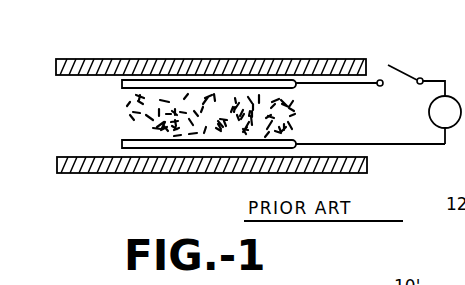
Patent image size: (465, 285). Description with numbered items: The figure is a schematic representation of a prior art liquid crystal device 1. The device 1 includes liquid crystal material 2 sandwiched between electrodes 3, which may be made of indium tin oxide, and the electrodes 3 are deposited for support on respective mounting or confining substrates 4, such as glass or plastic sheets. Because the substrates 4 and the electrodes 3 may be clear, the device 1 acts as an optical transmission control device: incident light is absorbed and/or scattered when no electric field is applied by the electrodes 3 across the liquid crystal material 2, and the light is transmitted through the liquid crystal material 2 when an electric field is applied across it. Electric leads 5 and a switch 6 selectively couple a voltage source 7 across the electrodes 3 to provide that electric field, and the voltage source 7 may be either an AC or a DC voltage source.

The liquid crystal device 1 is at (280, 46).
The liquid crystal material 2 is at (124, 113).
The electrodes 3 is at (123, 88).
The substrates 4 is at (86, 59).
The electric leads 5 is at (370, 143).
The switch 6 is at (388, 65).
The voltage source 7 is at (428, 117).